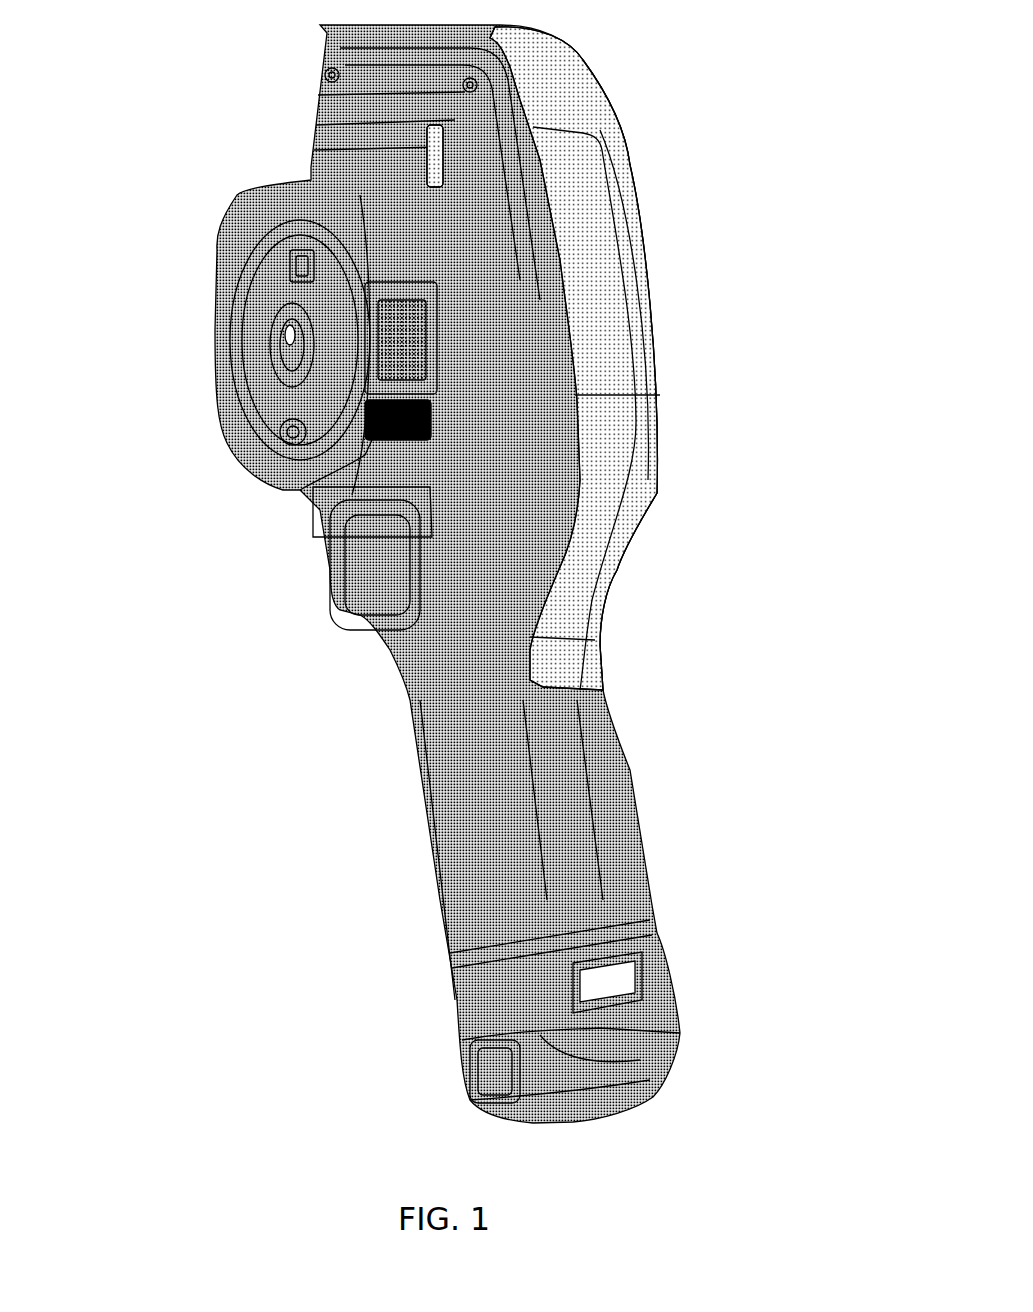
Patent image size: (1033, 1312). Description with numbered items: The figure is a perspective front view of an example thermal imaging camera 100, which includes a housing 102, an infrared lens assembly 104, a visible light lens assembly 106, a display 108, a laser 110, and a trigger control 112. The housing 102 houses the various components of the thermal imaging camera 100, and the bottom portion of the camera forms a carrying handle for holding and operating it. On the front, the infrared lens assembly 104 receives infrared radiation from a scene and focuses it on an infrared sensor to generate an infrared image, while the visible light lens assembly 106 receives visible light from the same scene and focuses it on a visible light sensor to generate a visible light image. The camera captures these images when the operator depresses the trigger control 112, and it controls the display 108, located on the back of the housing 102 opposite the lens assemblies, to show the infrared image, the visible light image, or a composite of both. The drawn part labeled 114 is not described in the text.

The thermal imaging camera 100 is at (268, 106).
The housing 102 is at (560, 80).
The infrared lens assembly 104 is at (300, 375).
The visible light lens assembly 106 is at (313, 267).
The display 108 is at (660, 204).
The laser 110 is at (300, 433).
The trigger control 112 is at (348, 588).
The trigger guard 114 is at (355, 450).